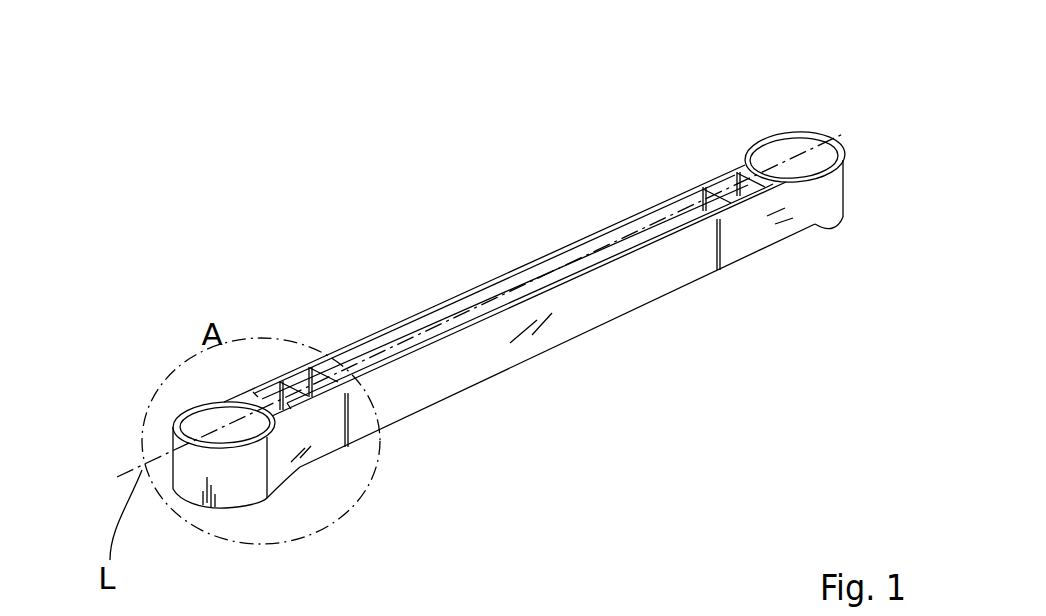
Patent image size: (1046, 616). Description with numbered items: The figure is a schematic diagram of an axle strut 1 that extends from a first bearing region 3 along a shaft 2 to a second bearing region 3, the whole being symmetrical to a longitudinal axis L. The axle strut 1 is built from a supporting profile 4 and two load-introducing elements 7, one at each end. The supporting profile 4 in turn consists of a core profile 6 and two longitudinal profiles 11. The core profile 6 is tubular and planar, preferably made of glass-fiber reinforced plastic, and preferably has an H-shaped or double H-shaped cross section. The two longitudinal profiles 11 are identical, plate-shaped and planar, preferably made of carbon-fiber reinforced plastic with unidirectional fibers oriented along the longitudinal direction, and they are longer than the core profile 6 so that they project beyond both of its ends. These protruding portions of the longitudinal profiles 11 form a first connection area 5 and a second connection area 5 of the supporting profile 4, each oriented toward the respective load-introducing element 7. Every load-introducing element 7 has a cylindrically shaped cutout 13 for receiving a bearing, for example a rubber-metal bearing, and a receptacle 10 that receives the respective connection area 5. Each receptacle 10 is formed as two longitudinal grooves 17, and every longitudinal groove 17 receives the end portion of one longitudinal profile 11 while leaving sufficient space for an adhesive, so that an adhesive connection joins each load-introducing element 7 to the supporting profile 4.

The axle strut 1 is at (652, 342).
The shaft 2 is at (438, 275).
The bearing region 3 is at (190, 388).
The supporting profile 4 is at (543, 250).
The connection area 5 is at (280, 371).
The core profile 6 is at (585, 330).
The load-introducing element 7 is at (281, 462).
The receptacle 10 is at (692, 175).
The longitudinal profile 11 is at (593, 232).
The cutout 13 is at (774, 157).
The longitudinal groove 17 is at (273, 377).